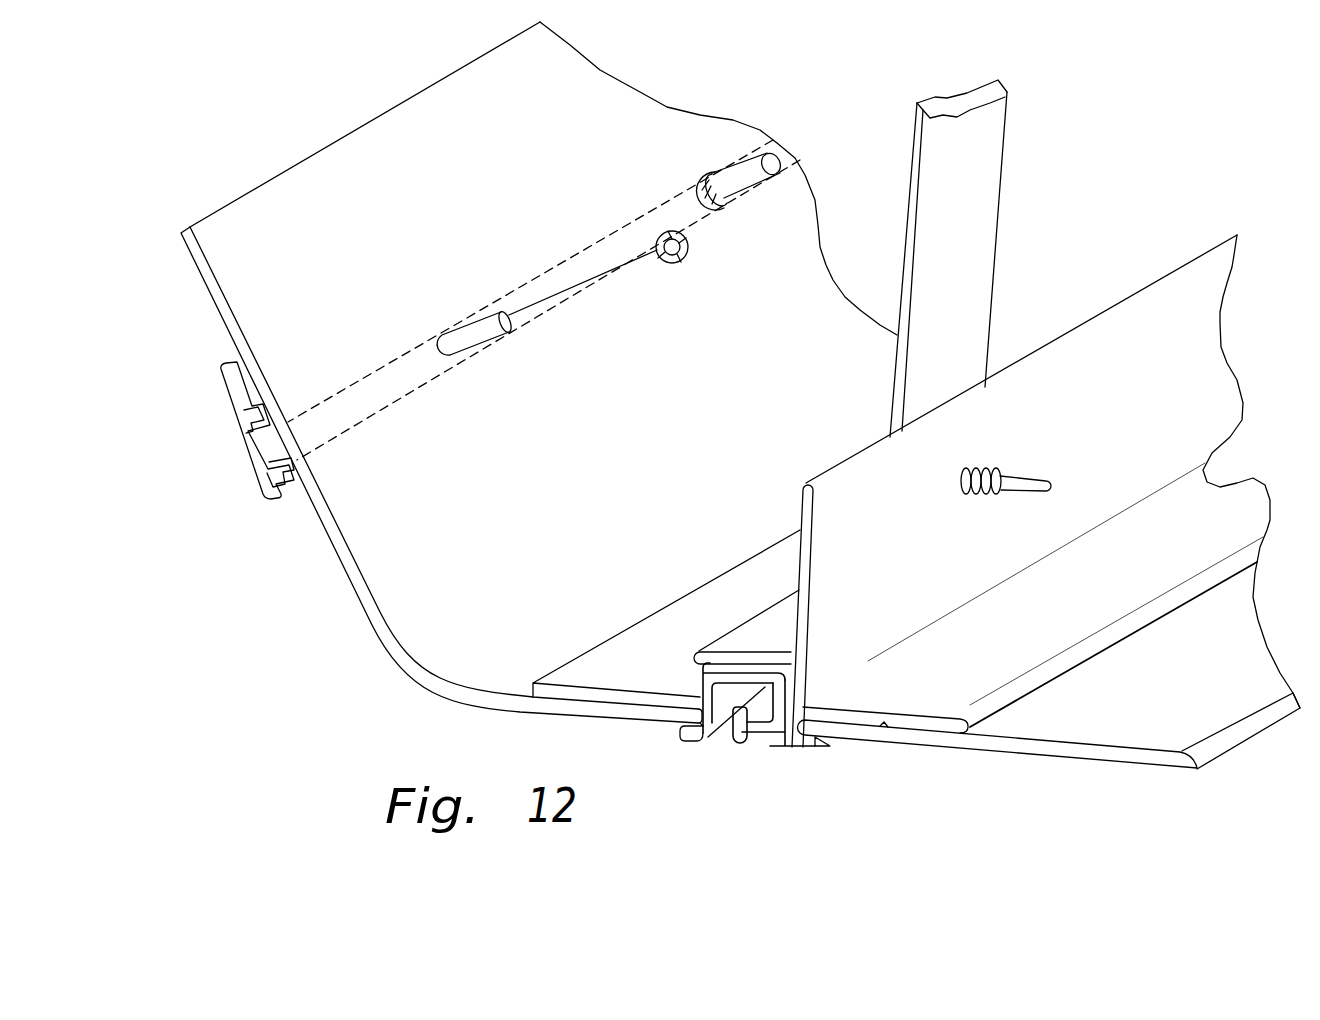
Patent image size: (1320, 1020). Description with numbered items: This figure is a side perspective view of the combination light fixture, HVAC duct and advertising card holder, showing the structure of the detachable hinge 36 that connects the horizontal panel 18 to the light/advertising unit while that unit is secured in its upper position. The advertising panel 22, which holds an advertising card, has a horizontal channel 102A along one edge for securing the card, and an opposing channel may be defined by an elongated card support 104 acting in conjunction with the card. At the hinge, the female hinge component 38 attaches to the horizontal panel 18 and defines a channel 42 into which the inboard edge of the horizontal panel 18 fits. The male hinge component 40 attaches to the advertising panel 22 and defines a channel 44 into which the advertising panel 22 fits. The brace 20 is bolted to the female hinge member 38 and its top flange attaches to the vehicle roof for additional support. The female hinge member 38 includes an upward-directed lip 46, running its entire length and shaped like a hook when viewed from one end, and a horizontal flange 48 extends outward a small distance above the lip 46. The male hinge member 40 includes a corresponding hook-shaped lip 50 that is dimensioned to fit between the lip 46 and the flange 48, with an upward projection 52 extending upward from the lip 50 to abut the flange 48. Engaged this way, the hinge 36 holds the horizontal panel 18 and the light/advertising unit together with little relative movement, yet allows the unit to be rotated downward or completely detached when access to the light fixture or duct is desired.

The horizontal channel 102A is at (208, 338).
The elongated card support 104 is at (280, 497).
The advertising panel 22 is at (476, 532).
The brace 20 is at (967, 245).
The female hinge component 38 is at (1087, 602).
The horizontal panel 18 is at (1205, 679).
The channel 42 is at (843, 730).
The male hinge component 40 is at (639, 676).
The horizontal flange 48 is at (783, 642).
The channel 44 is at (660, 716).
The upward projection 52 is at (700, 677).
The lip 50 is at (777, 693).
The upward-directed lip 46 is at (748, 730).
The detachable hinge 36 is at (726, 747).